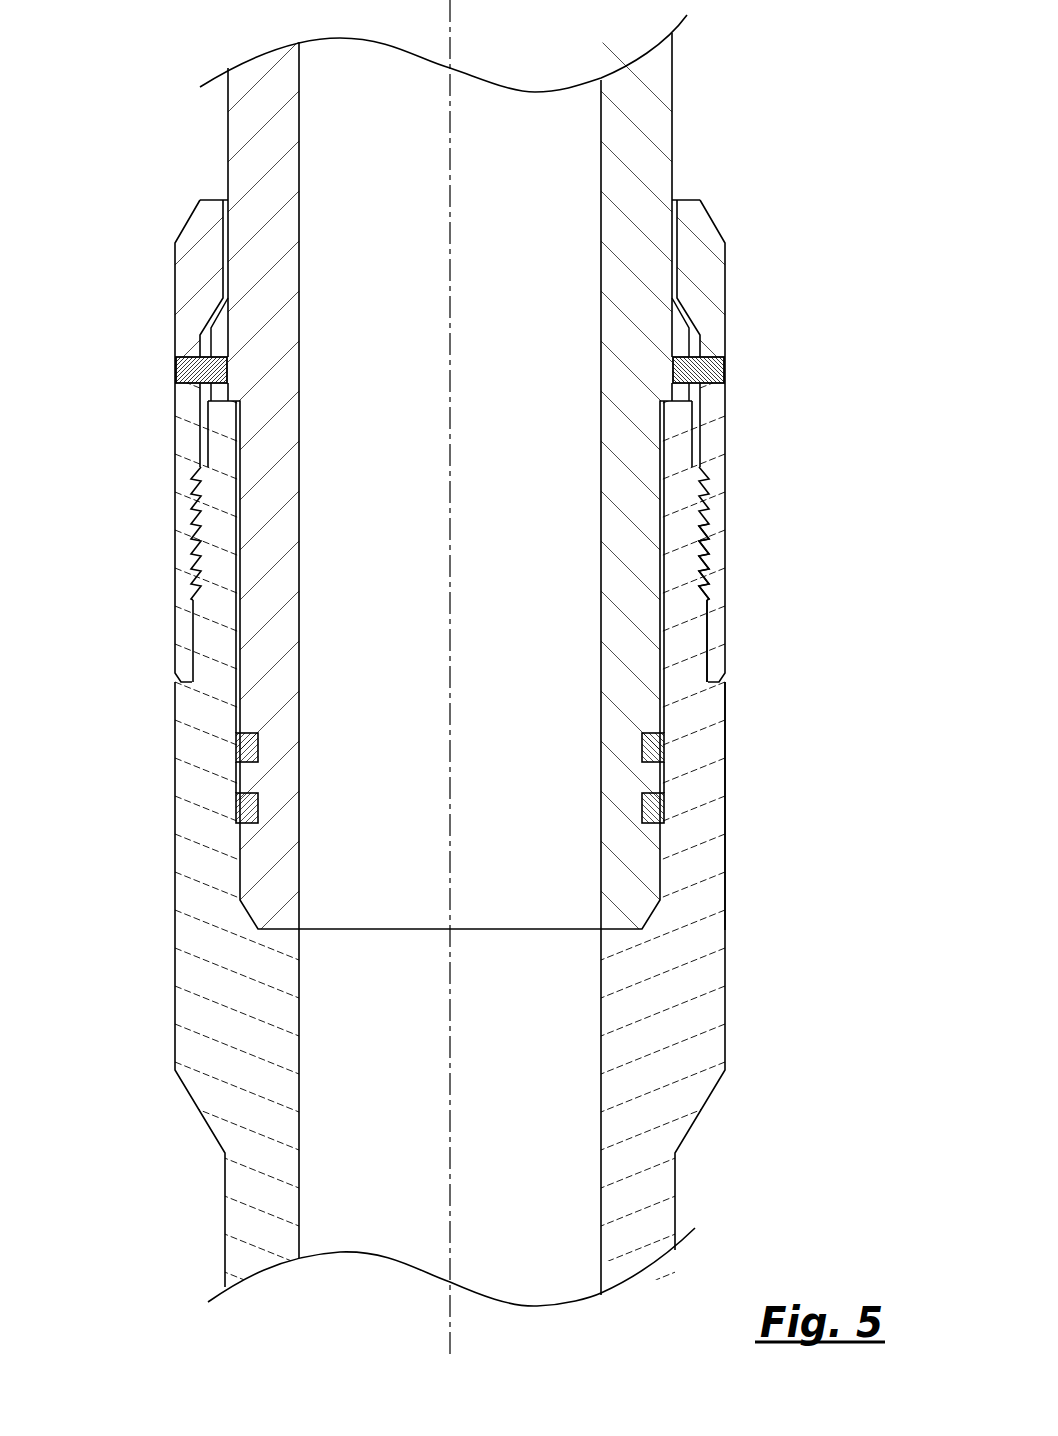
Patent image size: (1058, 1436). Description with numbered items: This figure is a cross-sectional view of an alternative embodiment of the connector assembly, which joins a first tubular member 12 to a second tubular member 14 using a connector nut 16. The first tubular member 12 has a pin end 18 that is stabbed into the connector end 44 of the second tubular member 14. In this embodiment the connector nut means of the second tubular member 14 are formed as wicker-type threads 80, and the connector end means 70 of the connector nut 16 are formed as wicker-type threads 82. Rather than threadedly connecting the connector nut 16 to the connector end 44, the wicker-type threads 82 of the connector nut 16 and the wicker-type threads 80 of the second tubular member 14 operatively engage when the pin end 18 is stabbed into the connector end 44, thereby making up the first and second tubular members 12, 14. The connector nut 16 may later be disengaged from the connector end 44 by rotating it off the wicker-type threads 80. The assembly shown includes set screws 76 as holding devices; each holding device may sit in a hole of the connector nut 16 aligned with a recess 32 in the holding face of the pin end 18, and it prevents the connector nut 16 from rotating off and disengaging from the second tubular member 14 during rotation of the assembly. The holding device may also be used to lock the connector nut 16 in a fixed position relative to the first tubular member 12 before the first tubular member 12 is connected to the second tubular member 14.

The first tubular member 12 is at (653, 98).
The second tubular member 14 is at (217, 1026).
The connector nut 16 is at (188, 282).
The pin end 18 is at (268, 638).
The recess 32 is at (229, 360).
The connector end 44 is at (703, 878).
The connector end means 70 is at (190, 538).
The set screw 76 is at (193, 369).
The wicker-type threads 80 is at (705, 503).
The wicker-type threads 82 is at (712, 535).